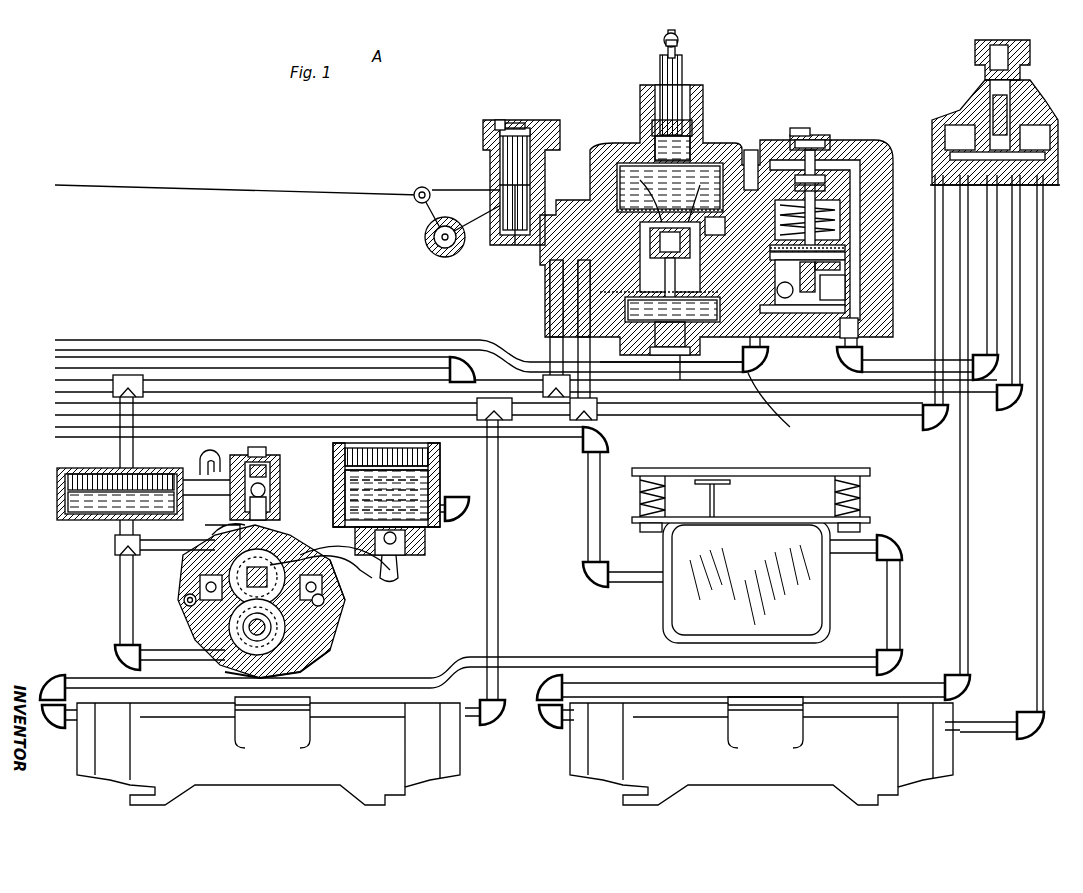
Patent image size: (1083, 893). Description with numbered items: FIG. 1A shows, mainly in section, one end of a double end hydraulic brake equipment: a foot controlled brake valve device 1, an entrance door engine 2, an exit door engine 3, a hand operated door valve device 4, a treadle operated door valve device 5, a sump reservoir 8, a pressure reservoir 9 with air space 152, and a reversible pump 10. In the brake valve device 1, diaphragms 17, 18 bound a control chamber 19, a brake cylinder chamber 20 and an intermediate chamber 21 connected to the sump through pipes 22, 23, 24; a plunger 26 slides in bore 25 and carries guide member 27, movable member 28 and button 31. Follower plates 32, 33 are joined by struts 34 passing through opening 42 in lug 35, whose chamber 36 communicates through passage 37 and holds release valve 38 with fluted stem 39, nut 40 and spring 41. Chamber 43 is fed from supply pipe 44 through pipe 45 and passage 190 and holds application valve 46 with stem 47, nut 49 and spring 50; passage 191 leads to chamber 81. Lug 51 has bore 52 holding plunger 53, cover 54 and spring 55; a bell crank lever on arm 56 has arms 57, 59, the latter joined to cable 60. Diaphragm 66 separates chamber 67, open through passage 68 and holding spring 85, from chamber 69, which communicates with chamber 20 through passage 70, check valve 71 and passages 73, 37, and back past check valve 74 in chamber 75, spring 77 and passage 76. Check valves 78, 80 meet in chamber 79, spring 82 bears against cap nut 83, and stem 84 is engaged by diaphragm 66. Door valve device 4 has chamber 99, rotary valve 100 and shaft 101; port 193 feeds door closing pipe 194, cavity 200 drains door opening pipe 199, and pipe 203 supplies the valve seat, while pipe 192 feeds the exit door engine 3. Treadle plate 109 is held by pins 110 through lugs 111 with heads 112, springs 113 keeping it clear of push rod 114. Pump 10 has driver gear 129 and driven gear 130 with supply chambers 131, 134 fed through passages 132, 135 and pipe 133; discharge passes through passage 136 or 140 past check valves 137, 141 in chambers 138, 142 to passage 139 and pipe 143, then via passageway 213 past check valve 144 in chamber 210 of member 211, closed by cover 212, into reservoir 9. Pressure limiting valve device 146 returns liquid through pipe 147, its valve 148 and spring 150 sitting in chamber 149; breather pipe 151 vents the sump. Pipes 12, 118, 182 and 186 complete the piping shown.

The brake valve device 1 is at (714, 89).
The entrance door engine 2 is at (738, 793).
The exit door engine 3 is at (240, 788).
The hand operated door valve device 4 is at (1038, 91).
The treadle operated door valve device 5 is at (840, 604).
The sump reservoir 8 is at (73, 524).
The pressure reservoir 9 is at (425, 544).
The reversible pump 10 is at (318, 652).
The pipe 12 is at (56, 360).
The flexible diaphragm 17 is at (748, 170).
The flexible diaphragm 18 is at (566, 300).
The control chamber 19 is at (630, 168).
The brake cylinder chamber 20 is at (608, 330).
The intermediate chamber 21 is at (600, 215).
The pipe 22 is at (548, 336).
The pipe 23 is at (56, 382).
The pipe 24 is at (118, 443).
The bore 25 is at (700, 125).
The plunger 26 is at (652, 122).
The hollow guide member 27 is at (680, 82).
The movable member 28 is at (676, 50).
The button 31 is at (664, 42).
The follower plate 32 is at (655, 150).
The follower plate 33 is at (717, 339).
The struts 34 is at (569, 190).
The lug 35 is at (600, 240).
The chamber 36 is at (598, 185).
The passage 37 is at (722, 160).
The brake release valve 38 is at (715, 225).
The fluted stem 39 is at (640, 282).
The screw-threaded nut 40 is at (715, 177).
The spring 41 is at (648, 205).
The through opening 42 is at (702, 215).
The chamber 43 is at (730, 365).
The supply pipe 44 is at (56, 405).
The connecting pipe 45 is at (585, 381).
The brake application valve 46 is at (695, 340).
The fluted stem 47 is at (630, 315).
The nut 49 is at (680, 382).
The spring 50 is at (650, 350).
The lug 51 is at (530, 240).
The through bore 52 is at (528, 130).
The plunger 53 is at (530, 165).
The cover 54 is at (518, 125).
The spring 55 is at (505, 122).
The arm 56 is at (470, 248).
The arm 57 is at (518, 235).
The arm 59 is at (418, 205).
The flexible cable 60 is at (215, 177).
The flexible diaphragm 66 is at (850, 248).
The chamber 67 is at (845, 205).
The passage 68 is at (750, 175).
The chamber 69 is at (850, 258).
The passage 70 is at (846, 312).
The check valve 71 is at (858, 328).
The passage 73 is at (770, 345).
The check valve 74 is at (845, 290).
The chamber 75 is at (782, 292).
The passage 76 is at (840, 268).
The spring 77 is at (810, 273).
The check valve 78 is at (825, 188).
The chamber 79 is at (820, 175).
The check valve 80 is at (815, 160).
The chamber 81 is at (825, 140).
The spring 82 is at (812, 140).
The cap nut 83 is at (800, 128).
The stem 84 is at (840, 222).
The spring 85 is at (775, 165).
The chamber 99 is at (1050, 112).
The rotary valve 100 is at (990, 100).
The shaft 101 is at (985, 72).
The treadle plate 109 is at (760, 478).
The pins 110 is at (660, 490).
The lugs 111 is at (872, 522).
The heads 112 is at (648, 533).
The spring 113 is at (656, 496).
The valve push rod 114 is at (716, 500).
The pipe 118 is at (110, 680).
The driver gear 129 is at (300, 618).
The driven gear 130 is at (300, 635).
The liquid supply chamber 131 is at (216, 528).
The passage 132 is at (170, 540).
The pipe 133 is at (118, 585).
The liquid supply chamber 134 is at (294, 664).
The passage 135 is at (225, 662).
The passage 136 is at (340, 620).
The check valve 137 is at (300, 590).
The chamber 138 is at (300, 560).
The discharge passage 139 is at (335, 580).
The passage 140 is at (195, 620).
The check valve 141 is at (200, 580).
The chamber 142 is at (200, 568).
The pump discharge pipe 143 is at (268, 505).
The check valve 144 is at (378, 582).
The pressure limiting valve device 146 is at (290, 450).
The pipe 147 is at (215, 495).
The valve 148 is at (266, 490).
The chamber 149 is at (268, 470).
The spring 150 is at (254, 443).
The breather pipe 151 is at (206, 460).
The space 152 is at (398, 445).
The pipe 182 is at (56, 429).
The pipe 186 is at (58, 340).
The passage 190 is at (600, 292).
The passage 191 is at (757, 350).
The pipe 192 is at (500, 520).
The port 193 is at (1016, 178).
The door closing pipe 194 is at (1040, 290).
The door opening pipe 199 is at (960, 192).
The cavity 200 is at (1000, 190).
The pipe 203 is at (930, 370).
The chamber 210 is at (395, 520).
The member 211 is at (360, 515).
The cover 212 is at (418, 557).
The passageway 213 is at (396, 565).